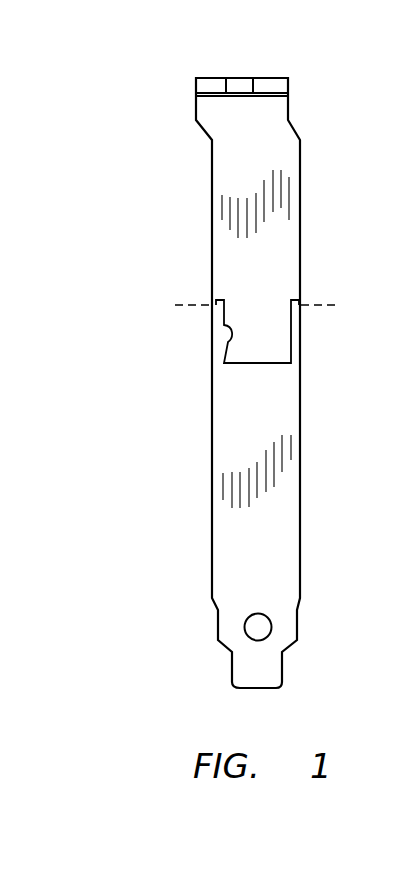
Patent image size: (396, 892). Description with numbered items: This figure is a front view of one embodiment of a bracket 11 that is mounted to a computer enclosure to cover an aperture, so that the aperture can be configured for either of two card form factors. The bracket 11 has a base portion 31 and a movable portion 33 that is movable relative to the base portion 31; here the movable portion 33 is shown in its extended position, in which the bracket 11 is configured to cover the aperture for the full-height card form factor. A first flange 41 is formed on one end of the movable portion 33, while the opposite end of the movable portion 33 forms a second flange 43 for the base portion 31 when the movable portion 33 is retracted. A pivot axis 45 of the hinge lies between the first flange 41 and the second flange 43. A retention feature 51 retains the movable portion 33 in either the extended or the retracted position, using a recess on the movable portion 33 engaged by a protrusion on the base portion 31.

The bracket 11 is at (108, 110).
The first flange 41 is at (262, 78).
The movable portion 33 is at (225, 183).
The pivot axis 45 is at (175, 305).
The second flange 43 is at (224, 343).
The retention feature 51 is at (266, 336).
The base portion 31 is at (226, 557).